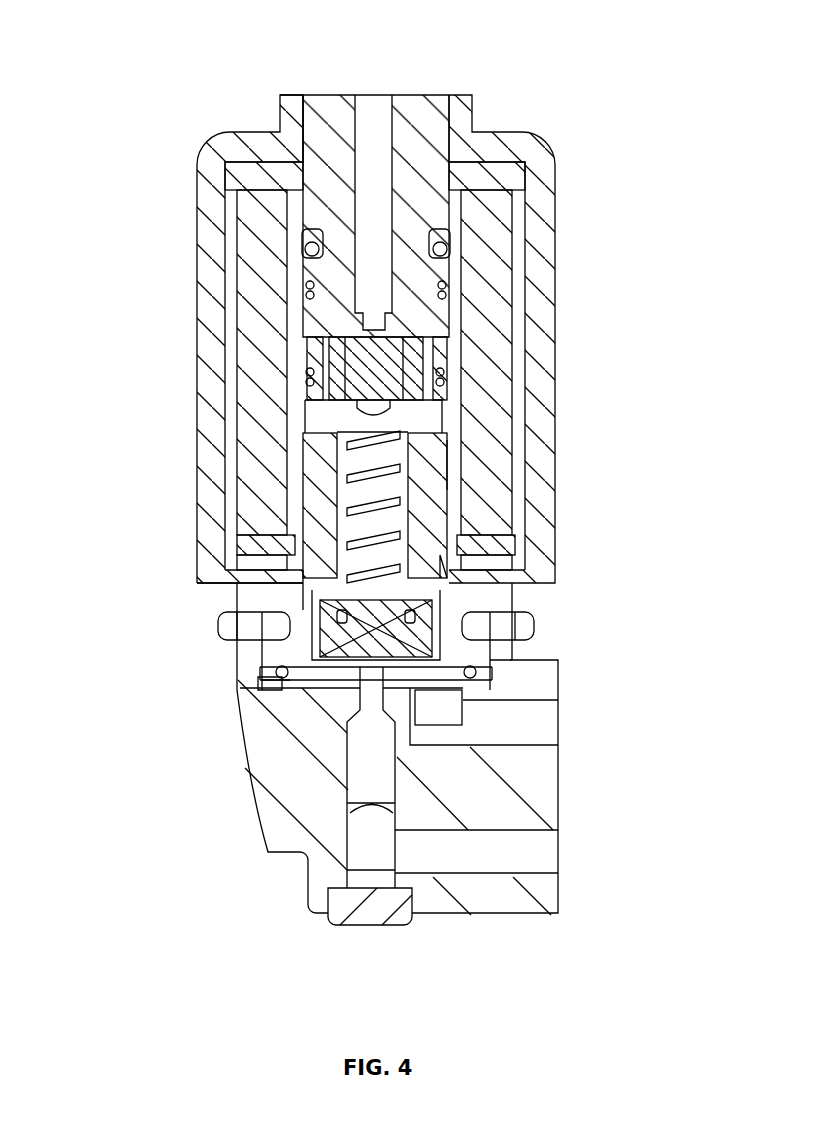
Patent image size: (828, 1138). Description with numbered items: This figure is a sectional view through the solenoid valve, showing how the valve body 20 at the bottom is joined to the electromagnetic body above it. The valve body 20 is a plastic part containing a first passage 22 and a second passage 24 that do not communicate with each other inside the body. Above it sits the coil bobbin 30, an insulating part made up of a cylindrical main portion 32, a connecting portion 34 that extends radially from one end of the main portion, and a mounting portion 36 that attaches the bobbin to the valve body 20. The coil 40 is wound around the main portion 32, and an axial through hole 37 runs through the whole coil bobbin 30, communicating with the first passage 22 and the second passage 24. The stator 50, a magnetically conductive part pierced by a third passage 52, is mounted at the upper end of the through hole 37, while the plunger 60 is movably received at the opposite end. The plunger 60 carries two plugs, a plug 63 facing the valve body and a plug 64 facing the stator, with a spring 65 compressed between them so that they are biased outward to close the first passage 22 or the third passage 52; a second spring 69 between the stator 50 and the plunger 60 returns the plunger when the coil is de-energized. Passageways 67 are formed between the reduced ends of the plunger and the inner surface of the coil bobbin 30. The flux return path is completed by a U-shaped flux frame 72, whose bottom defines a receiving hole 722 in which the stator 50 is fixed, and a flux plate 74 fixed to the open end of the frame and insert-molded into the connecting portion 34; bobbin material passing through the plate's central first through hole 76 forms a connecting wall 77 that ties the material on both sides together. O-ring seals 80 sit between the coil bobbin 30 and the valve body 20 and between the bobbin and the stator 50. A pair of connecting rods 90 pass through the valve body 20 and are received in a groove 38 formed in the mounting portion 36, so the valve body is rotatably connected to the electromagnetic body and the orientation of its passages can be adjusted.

The valve body 20 is at (307, 802).
The first passage 22 is at (520, 858).
The second passage 24 is at (528, 733).
The coil bobbin 30 is at (492, 177).
The main portion 32 is at (440, 366).
The connecting portion 34 is at (498, 602).
The mounting portion 36 is at (487, 650).
The through hole 37 is at (447, 463).
The groove 38 is at (262, 646).
The coil 40 is at (490, 302).
The stator 50 is at (422, 117).
The third passage 52 is at (372, 118).
The plunger 60 is at (317, 497).
The plug 63 is at (372, 640).
The plug 64 is at (365, 372).
The spring 65 is at (352, 455).
The passageways 67 is at (438, 341).
The spring 69 is at (302, 330).
The flux frame 72 is at (541, 195).
The receiving hole 722 is at (305, 95).
The flux plate 74 is at (245, 560).
The first through hole 76 is at (200, 571).
The connecting wall 77 is at (450, 563).
The O-ring seals 80 is at (303, 246).
The connecting rods 90 is at (223, 622).